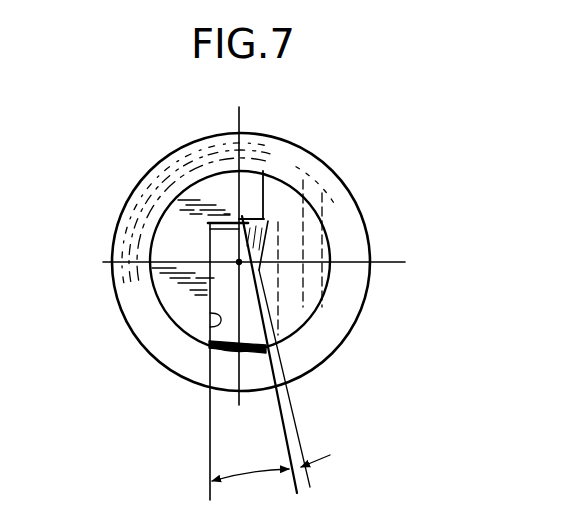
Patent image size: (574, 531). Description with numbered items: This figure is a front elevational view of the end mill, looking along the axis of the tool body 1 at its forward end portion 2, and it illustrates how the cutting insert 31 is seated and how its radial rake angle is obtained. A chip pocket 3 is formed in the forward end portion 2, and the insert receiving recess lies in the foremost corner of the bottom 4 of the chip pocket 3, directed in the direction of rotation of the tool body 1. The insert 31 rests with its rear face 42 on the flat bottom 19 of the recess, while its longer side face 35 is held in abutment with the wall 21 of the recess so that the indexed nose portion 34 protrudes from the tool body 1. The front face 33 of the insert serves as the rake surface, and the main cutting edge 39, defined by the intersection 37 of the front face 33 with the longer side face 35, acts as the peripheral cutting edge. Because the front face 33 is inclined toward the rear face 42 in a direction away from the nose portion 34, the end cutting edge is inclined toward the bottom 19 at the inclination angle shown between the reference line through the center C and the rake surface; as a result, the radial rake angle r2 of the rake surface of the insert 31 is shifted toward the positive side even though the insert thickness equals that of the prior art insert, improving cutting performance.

The tool body 1 is at (187, 143).
The forward end portion 2 is at (163, 179).
The chip pocket 3 is at (308, 247).
The bottom of the chip pocket 4 is at (266, 187).
The bottom of the insert receiving recess 19 is at (205, 336).
The wall of the insert receiving recess 21 is at (268, 234).
The cutting insert 31 is at (283, 285).
The front face 33 is at (265, 311).
The nose portion 34 is at (282, 365).
The longer side face 35 is at (230, 214).
The intersection of front face and longer side face 37 is at (270, 338).
The main cutting edge 39 is at (270, 347).
The rear face 42 is at (205, 291).
The center of rotation C is at (237, 259).
The radial rake angle r2 is at (302, 480).